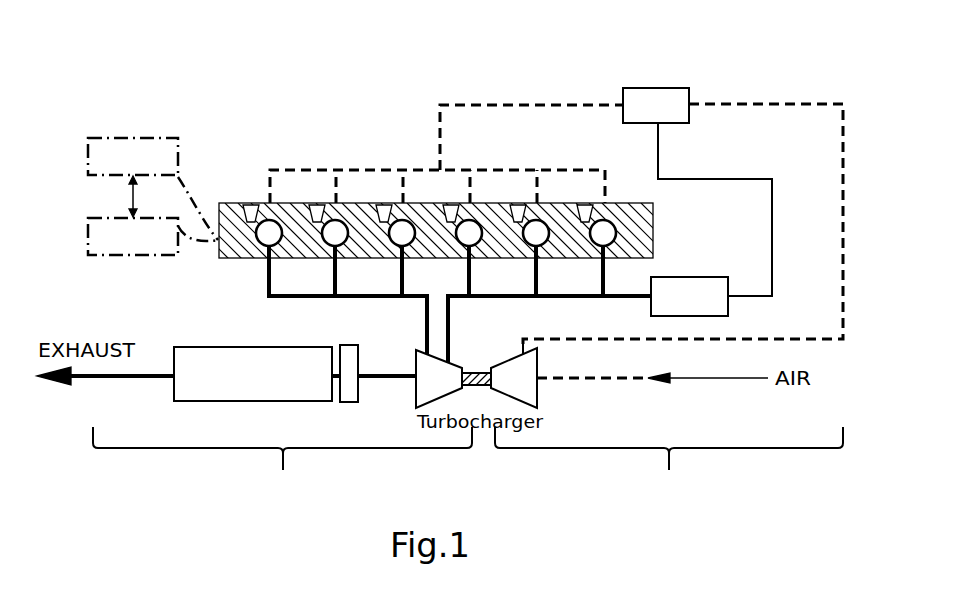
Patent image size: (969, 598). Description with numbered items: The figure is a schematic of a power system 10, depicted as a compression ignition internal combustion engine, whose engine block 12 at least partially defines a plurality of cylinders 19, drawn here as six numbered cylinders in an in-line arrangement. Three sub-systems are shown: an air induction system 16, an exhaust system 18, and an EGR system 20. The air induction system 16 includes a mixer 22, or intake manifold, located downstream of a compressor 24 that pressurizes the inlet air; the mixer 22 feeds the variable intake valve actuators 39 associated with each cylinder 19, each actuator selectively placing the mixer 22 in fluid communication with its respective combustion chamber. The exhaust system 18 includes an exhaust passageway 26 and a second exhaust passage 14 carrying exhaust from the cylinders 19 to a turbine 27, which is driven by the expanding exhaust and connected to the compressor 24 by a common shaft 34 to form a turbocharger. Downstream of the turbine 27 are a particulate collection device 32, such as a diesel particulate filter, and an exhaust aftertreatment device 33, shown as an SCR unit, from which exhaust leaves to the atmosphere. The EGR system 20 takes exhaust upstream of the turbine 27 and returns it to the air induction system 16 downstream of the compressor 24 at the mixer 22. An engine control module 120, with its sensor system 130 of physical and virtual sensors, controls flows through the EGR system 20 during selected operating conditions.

The power system 10 is at (245, 92).
The engine block 12 is at (227, 203).
The second exhaust manifold 14 is at (628, 298).
The air induction system 16 is at (669, 462).
The exhaust system 18 is at (282, 462).
The cylinders 19 is at (333, 221).
The EGR system 20 is at (700, 277).
The mixer 22 is at (655, 88).
The compressor 24 is at (537, 398).
The exhaust passageway 26 is at (427, 322).
The turbine 27 is at (418, 395).
The particulate collection device 32 is at (351, 402).
The exhaust aftertreatment device 33 is at (207, 347).
The common shaft 34 is at (478, 373).
The variable intake valve actuators 39 is at (510, 205).
The engine control module 120 is at (118, 252).
The sensor system 130 is at (118, 172).